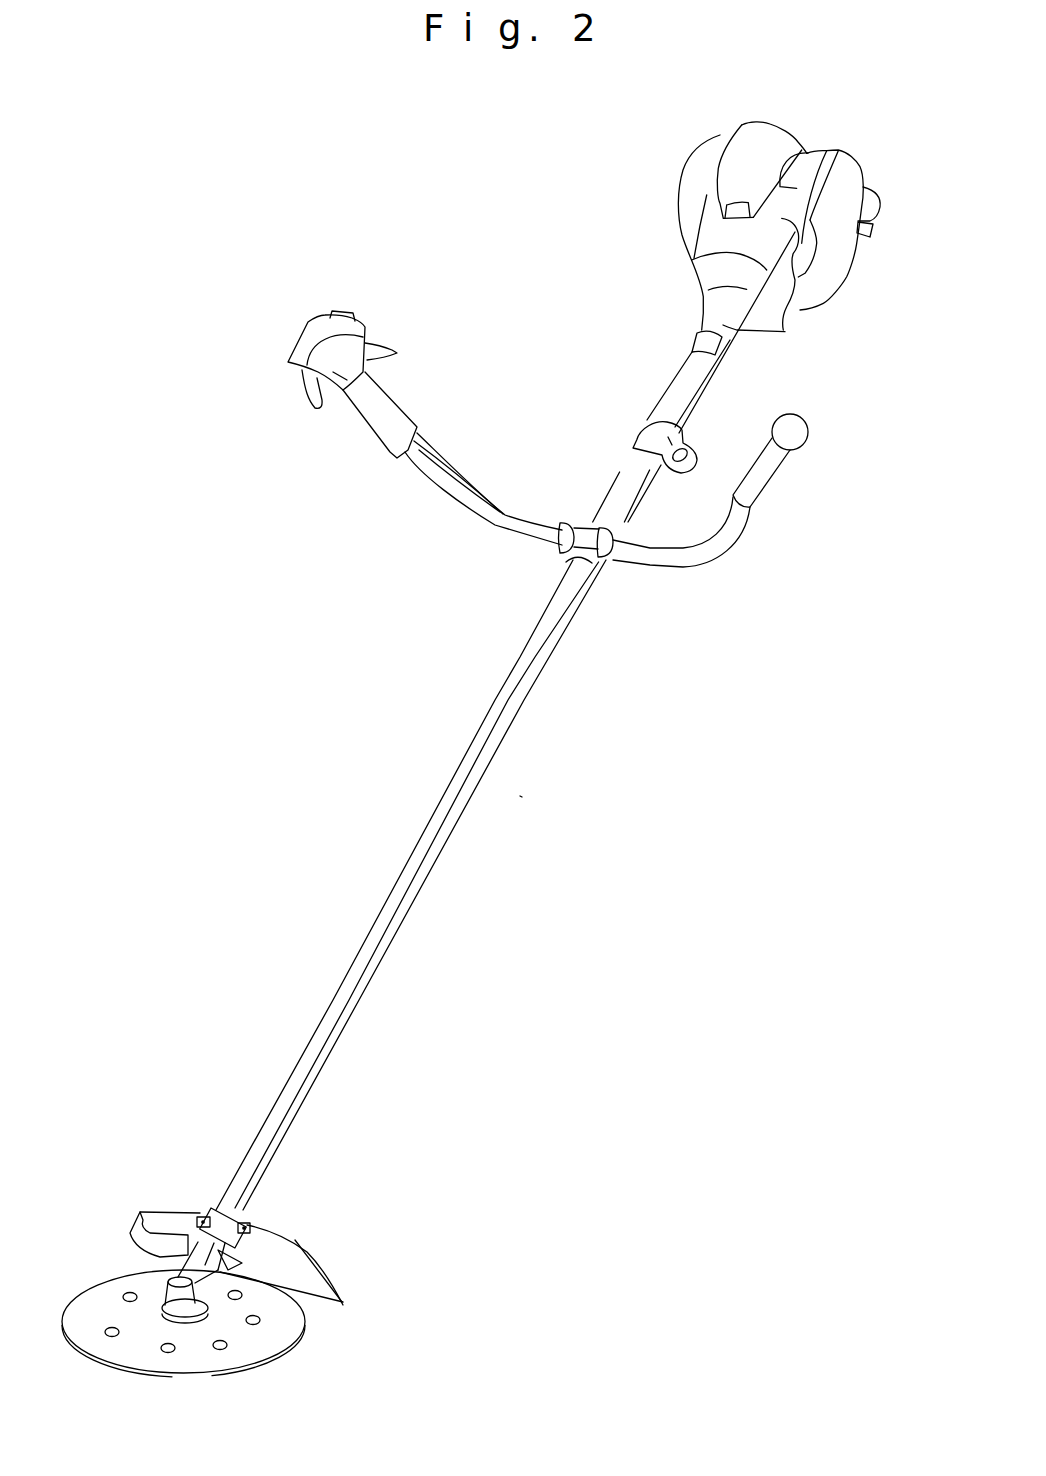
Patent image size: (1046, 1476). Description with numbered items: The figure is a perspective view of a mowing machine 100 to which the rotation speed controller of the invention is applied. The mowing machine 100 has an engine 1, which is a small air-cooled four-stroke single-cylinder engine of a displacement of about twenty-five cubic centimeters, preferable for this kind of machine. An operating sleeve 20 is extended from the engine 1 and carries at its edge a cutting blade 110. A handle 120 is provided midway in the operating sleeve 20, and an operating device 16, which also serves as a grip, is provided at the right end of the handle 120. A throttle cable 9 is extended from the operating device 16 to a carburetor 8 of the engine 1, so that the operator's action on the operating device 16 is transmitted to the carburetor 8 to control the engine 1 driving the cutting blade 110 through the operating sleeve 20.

The engine 1 is at (767, 136).
The carburetor 8 is at (843, 183).
The throttle cable 9 is at (730, 333).
The operating device 16 is at (365, 327).
The operating sleeve 20 is at (405, 863).
The mowing machine 100 is at (522, 797).
The cutting blade 110 is at (285, 1318).
The handle 120 is at (690, 568).